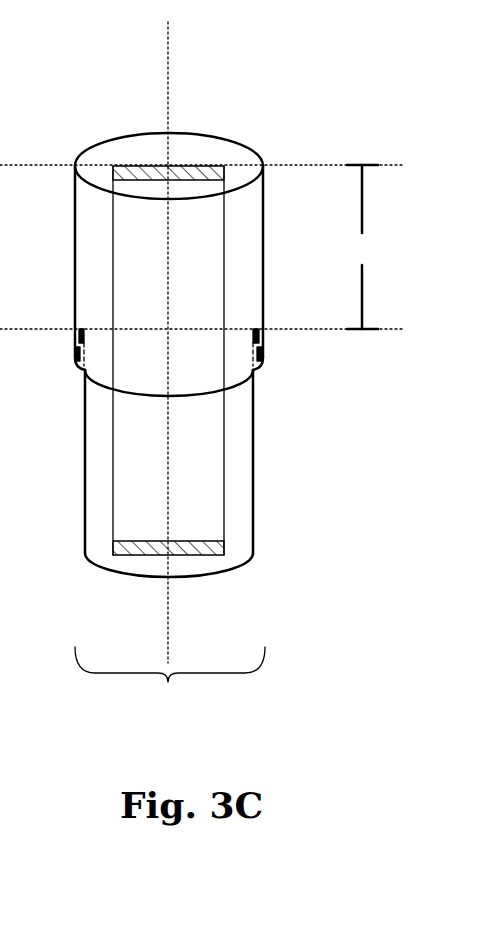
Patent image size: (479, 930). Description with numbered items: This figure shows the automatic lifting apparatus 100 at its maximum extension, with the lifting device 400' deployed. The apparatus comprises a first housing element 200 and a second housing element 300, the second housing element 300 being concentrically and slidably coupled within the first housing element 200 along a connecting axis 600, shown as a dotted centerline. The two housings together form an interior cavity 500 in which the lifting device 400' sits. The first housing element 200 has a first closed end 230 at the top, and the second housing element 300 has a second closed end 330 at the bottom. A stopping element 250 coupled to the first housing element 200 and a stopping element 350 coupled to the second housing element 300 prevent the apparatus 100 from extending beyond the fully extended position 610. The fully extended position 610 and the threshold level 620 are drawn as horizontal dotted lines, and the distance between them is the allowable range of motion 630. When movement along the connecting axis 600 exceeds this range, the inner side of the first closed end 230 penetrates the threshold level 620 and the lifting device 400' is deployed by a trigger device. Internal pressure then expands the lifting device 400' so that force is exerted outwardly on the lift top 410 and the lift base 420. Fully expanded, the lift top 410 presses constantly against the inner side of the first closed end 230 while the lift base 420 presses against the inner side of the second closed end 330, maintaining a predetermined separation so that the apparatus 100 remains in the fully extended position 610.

The automatic lifting apparatus 100 is at (170, 693).
The first housing element 200 is at (264, 244).
The first closed end 230 is at (190, 145).
The stopping element 250 is at (75, 353).
The second housing element 300 is at (255, 486).
The second closed end 330 is at (81, 558).
The stopping element 350 is at (79, 331).
The lifting device (deployed state) 400' is at (162, 399).
The lift top 410 is at (197, 166).
The lift base 420 is at (182, 556).
The interior cavity 500 is at (100, 462).
The connecting axis 600 is at (167, 51).
The fully extended position 610 is at (223, 165).
The threshold level 620 is at (223, 329).
The allowable range of motion 630 is at (367, 247).